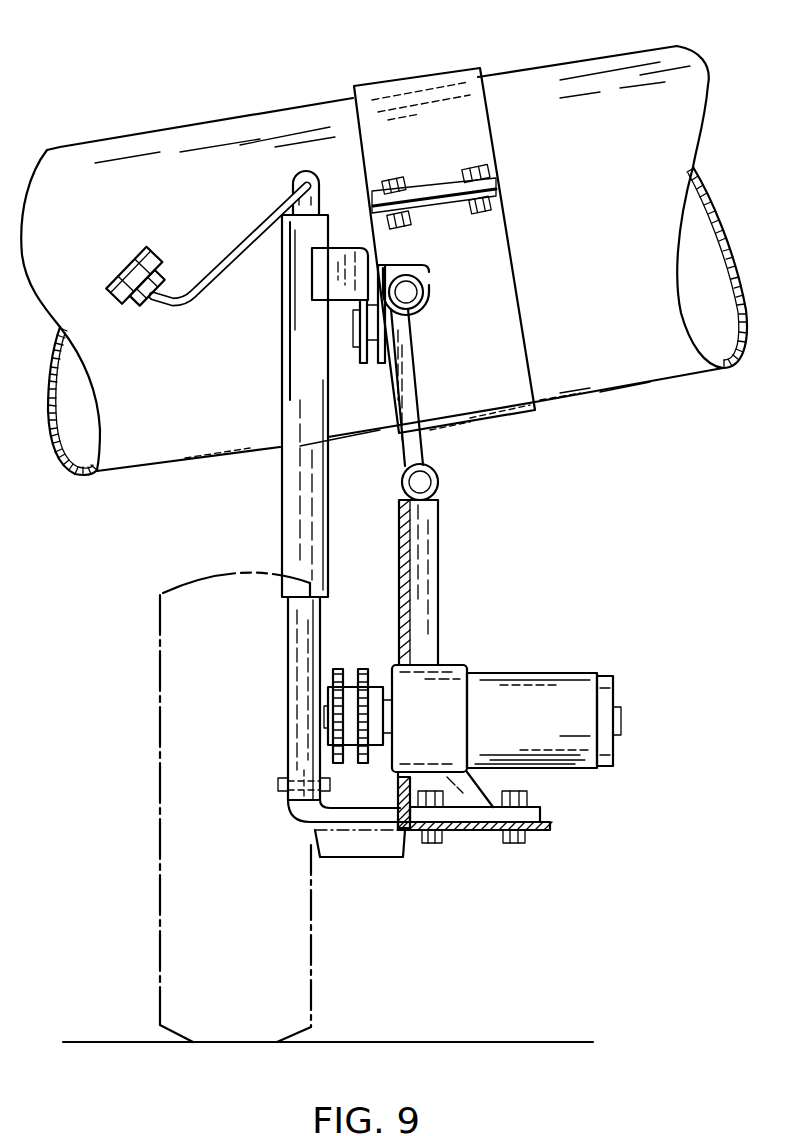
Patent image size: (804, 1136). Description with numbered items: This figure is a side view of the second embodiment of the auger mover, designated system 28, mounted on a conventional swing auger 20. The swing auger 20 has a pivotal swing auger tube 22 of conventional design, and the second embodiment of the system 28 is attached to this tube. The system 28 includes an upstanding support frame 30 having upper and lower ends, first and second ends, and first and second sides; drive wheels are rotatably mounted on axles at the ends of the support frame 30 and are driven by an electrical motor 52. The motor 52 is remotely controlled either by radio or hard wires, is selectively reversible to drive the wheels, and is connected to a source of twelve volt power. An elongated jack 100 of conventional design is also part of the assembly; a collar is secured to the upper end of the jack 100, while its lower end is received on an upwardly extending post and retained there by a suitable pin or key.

The swing auger 20 is at (500, 60).
The swing auger tube 22 is at (589, 165).
The system 28 is at (255, 514).
The upstanding support frame 30 is at (414, 565).
The electrical motor 52 is at (522, 703).
The elongated jack 100 is at (278, 398).